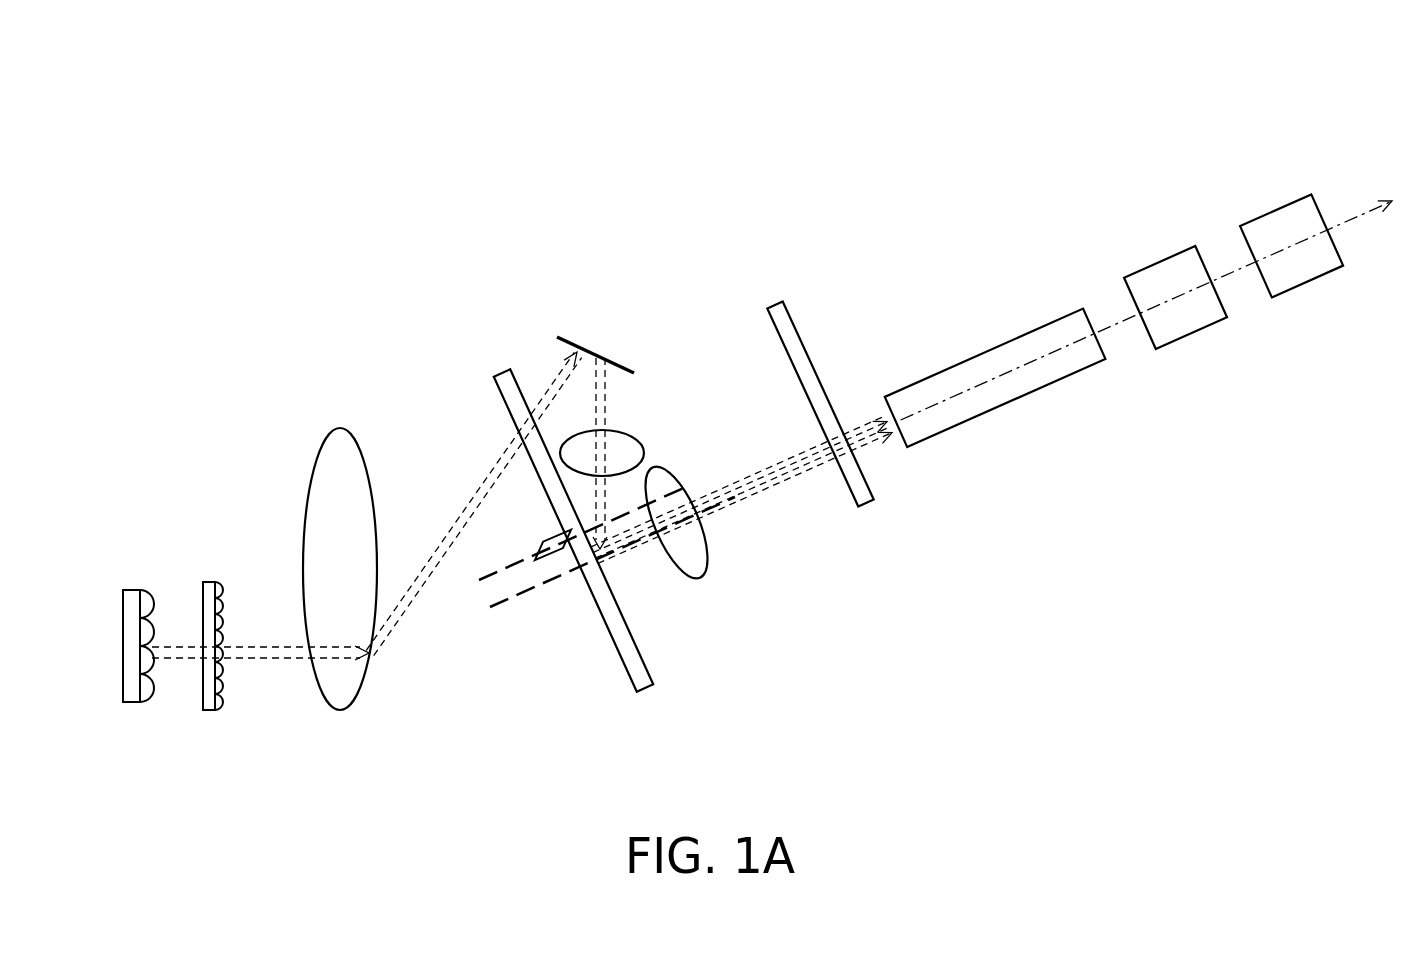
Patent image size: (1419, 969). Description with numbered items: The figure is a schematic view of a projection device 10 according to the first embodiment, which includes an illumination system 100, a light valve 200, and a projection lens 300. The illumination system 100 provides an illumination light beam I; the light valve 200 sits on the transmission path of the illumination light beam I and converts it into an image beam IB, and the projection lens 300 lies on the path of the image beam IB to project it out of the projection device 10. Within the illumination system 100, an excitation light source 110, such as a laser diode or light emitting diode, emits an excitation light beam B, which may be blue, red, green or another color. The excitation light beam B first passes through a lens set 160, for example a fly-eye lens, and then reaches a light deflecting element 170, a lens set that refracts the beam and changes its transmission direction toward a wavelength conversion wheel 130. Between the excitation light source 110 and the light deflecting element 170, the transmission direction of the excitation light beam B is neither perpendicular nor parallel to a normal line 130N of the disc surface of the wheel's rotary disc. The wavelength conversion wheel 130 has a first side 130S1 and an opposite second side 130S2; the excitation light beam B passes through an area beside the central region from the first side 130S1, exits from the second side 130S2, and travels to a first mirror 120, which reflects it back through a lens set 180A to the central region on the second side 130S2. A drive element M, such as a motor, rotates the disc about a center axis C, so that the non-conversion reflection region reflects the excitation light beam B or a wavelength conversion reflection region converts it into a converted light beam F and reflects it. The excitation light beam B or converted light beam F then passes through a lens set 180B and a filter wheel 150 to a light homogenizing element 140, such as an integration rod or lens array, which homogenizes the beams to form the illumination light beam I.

The illumination system 100 is at (553, 207).
The excitation light source 110 is at (133, 596).
The first mirror 120 is at (575, 342).
The wavelength conversion wheel 130 is at (506, 378).
The normal line 130N is at (515, 600).
The first side 130S1 is at (600, 658).
The second side 130S2 is at (658, 637).
The light homogenizing element 140 is at (960, 355).
The filter wheel 150 is at (778, 310).
The lens set 160 is at (212, 588).
The light deflecting element 170 is at (340, 438).
The lens set 180A is at (633, 450).
The lens set 180B is at (697, 555).
The light valve 200 is at (1162, 257).
The projection lens 300 is at (1275, 215).
The excitation light beam B is at (180, 653).
The center axis C is at (665, 484).
The converted light beam F is at (797, 480).
The illumination light beam I is at (1108, 320).
The image beam IB is at (1355, 215).
The drive element M is at (545, 542).
The projection device 10 is at (1333, 757).